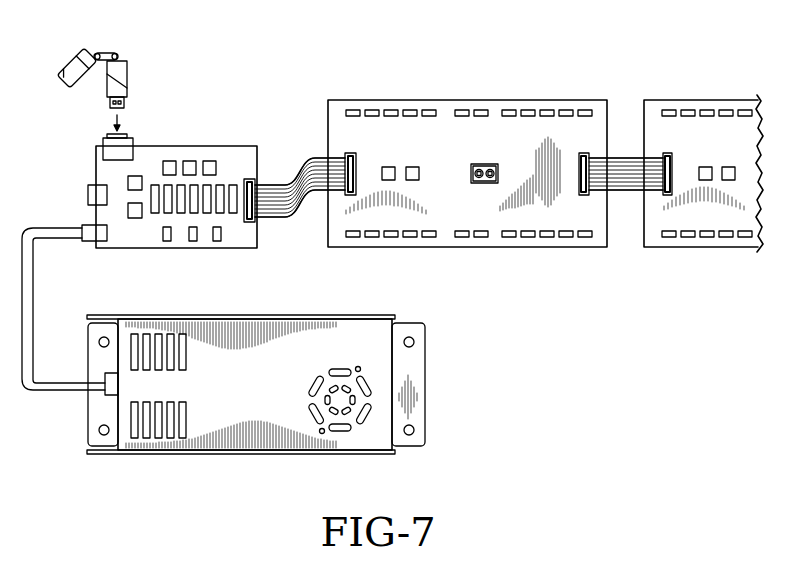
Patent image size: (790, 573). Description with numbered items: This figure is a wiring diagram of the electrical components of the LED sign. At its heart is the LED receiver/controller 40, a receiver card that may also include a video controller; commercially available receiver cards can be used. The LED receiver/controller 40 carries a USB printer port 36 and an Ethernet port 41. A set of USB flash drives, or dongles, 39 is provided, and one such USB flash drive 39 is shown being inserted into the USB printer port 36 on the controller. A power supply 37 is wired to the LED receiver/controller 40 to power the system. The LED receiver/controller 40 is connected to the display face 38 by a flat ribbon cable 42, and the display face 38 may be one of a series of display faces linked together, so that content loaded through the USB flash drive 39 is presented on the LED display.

The USB printer port 36 is at (108, 146).
The power supply 37 is at (346, 342).
The display face 38 is at (483, 138).
The USB flash drive 39 is at (120, 72).
The LED receiver/controller 40 is at (188, 170).
The Ethernet port 41 is at (92, 193).
The flat ribbon cable 42 is at (312, 170).